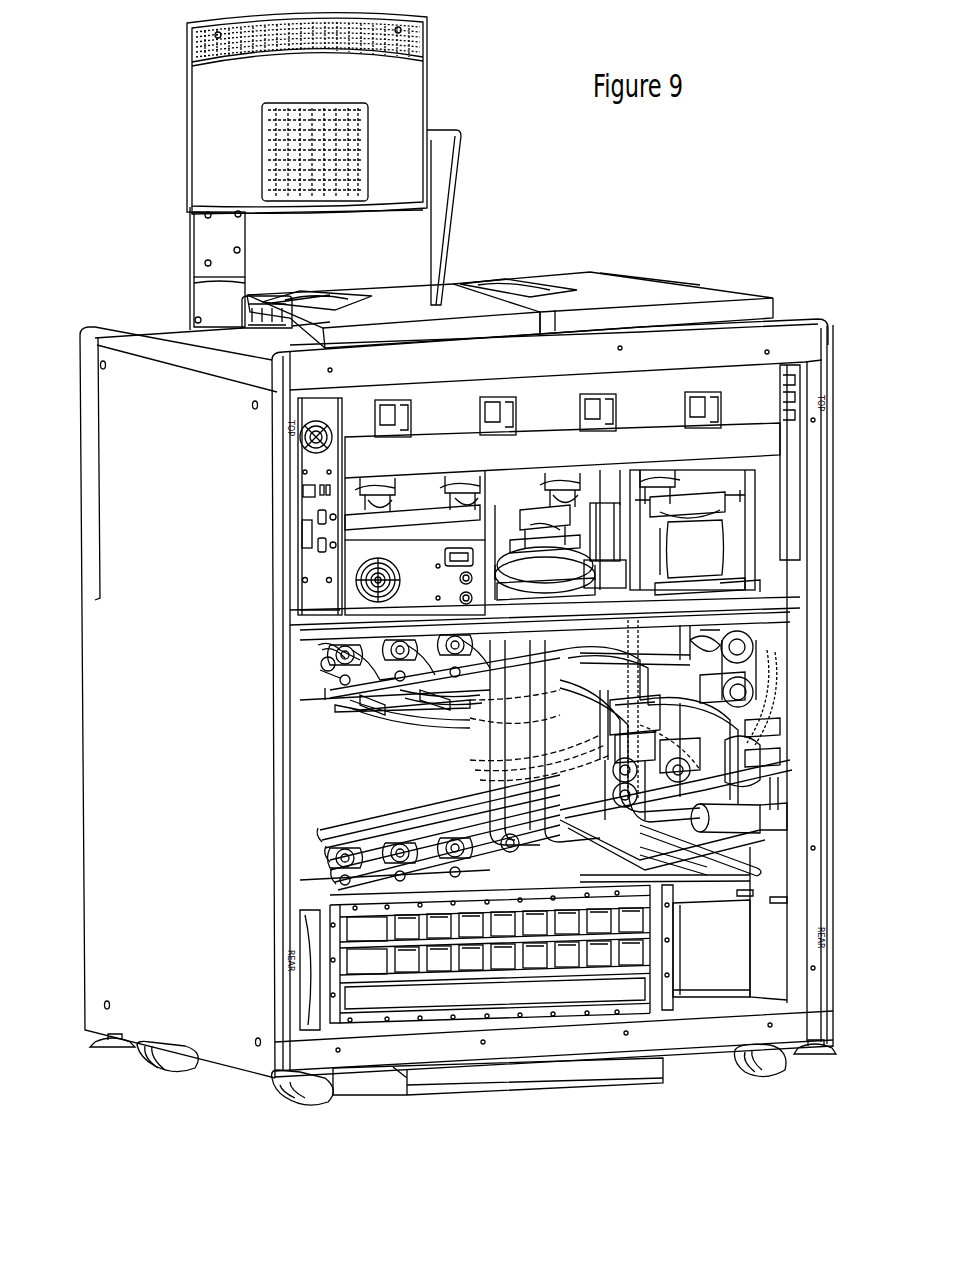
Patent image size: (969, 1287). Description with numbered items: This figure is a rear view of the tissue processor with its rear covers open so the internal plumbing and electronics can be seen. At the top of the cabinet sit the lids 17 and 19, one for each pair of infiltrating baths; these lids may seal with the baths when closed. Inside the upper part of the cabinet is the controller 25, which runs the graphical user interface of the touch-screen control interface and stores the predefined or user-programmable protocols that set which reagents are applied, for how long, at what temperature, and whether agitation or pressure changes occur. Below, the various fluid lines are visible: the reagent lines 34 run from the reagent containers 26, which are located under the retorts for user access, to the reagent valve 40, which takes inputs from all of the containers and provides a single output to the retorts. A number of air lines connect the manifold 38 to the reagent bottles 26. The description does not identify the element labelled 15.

The display arm / support panel 15 is at (461, 166).
The lid 17 is at (648, 281).
The lid 19 is at (440, 302).
The controller 25 is at (310, 410).
The reagent containers 26 is at (318, 655).
The reagent lines 34 is at (540, 887).
The manifold 38 is at (600, 740).
The reagent valve 40 is at (596, 510).